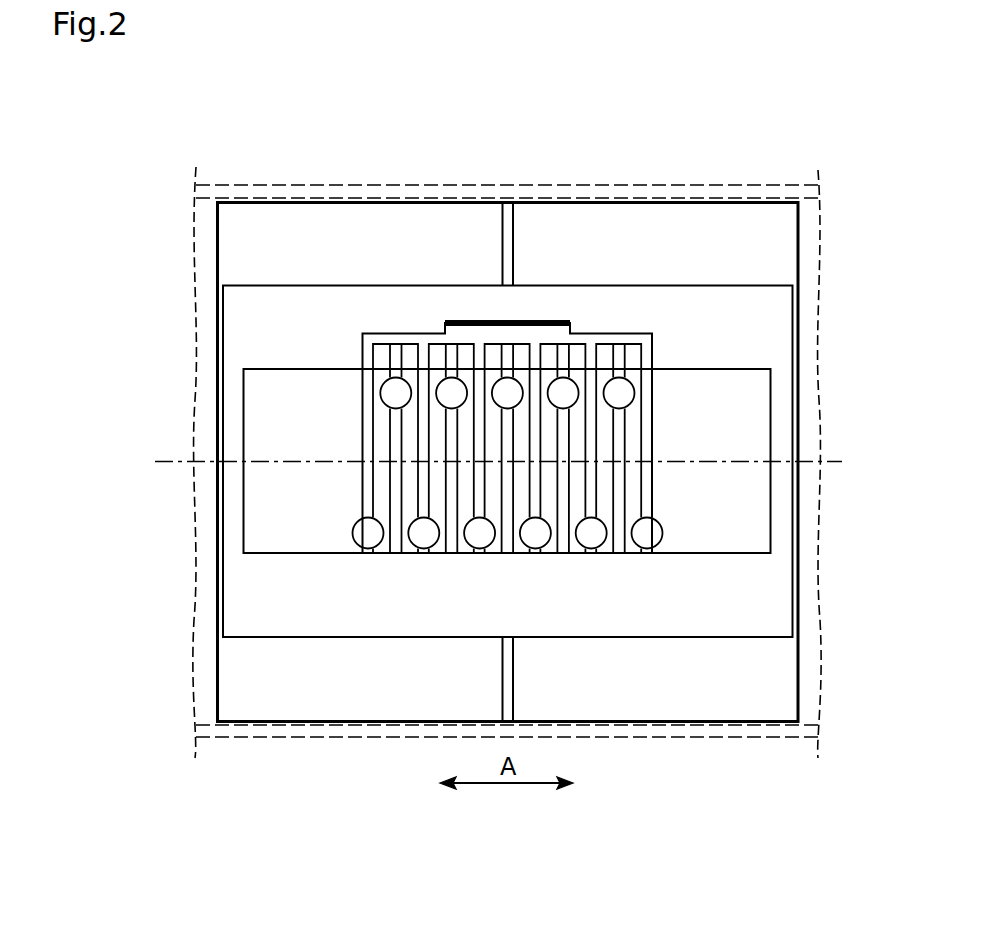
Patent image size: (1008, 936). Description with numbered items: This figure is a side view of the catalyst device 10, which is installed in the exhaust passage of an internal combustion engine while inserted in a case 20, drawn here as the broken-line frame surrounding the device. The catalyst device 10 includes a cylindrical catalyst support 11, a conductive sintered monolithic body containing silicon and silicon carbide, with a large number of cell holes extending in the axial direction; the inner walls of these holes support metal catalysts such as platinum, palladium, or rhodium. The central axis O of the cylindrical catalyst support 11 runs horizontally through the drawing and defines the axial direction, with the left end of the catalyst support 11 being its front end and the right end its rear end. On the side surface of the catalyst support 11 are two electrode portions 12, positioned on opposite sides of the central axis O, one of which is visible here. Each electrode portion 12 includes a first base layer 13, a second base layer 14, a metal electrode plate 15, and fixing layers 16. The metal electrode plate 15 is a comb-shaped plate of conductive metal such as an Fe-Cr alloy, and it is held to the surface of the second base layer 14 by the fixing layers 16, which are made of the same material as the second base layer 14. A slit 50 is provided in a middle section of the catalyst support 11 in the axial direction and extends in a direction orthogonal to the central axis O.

The catalyst device 10 is at (496, 434).
The catalyst support 11 is at (790, 240).
The electrode portion 12 is at (768, 343).
The first base layer 13 is at (762, 585).
The second base layer 14 is at (762, 534).
The metal electrode plate 15 is at (618, 340).
The fixing layer 16 is at (655, 535).
The case 20 is at (688, 185).
The slit 50 is at (502, 213).
The central axis O is at (168, 458).